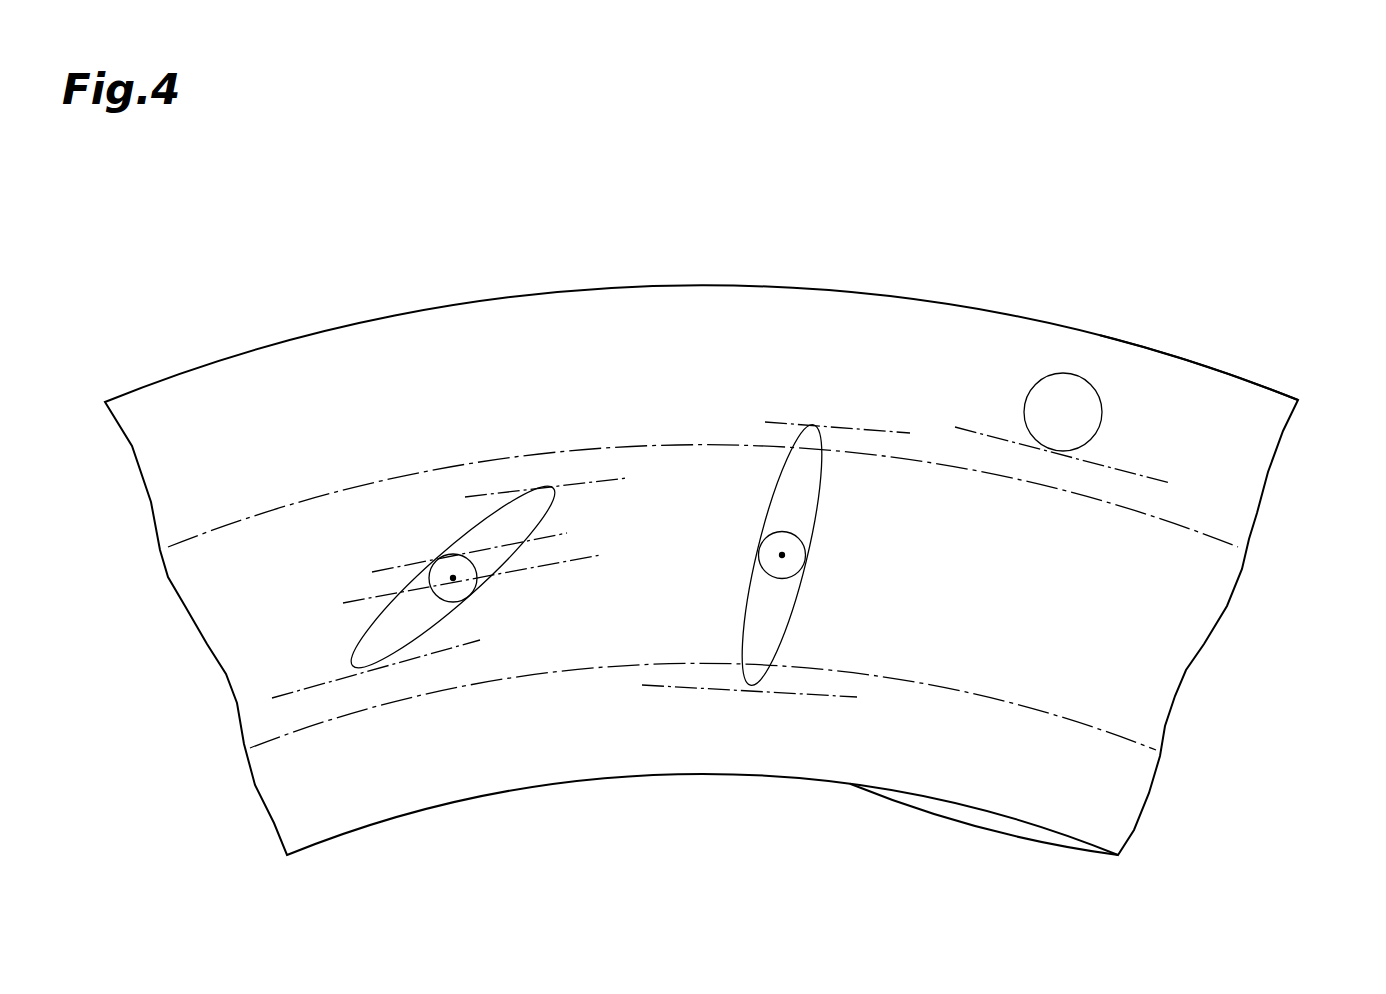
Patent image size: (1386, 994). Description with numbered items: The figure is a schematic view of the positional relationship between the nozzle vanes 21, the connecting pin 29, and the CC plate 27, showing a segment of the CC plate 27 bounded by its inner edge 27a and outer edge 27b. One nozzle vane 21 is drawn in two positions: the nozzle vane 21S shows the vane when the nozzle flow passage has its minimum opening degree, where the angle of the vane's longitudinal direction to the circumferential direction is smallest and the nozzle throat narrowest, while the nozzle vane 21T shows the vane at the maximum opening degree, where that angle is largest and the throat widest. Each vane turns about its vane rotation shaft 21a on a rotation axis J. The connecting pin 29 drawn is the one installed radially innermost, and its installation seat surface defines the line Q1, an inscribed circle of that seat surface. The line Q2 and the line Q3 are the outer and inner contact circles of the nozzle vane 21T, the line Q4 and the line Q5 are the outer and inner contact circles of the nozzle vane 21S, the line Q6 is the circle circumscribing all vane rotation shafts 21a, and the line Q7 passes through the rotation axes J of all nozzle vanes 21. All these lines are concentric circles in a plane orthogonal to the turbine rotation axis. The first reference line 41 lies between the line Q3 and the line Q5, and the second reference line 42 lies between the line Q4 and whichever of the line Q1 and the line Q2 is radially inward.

The CC plate 27 is at (777, 302).
The inner peripheral surface 27a is at (982, 813).
The outer peripheral surface 27b is at (1203, 364).
The connecting pin 29 is at (1065, 392).
The nozzle vane 21 is at (646, 542).
The nozzle vane at minimum opening degree 21S is at (505, 508).
The nozzle vane at maximum opening degree 21T is at (807, 495).
The vane rotation shaft 21a is at (450, 554).
The rotation axis of nozzle vane J is at (455, 578).
The first reference line 41 is at (1111, 726).
The second reference line 42 is at (1201, 531).
The inner circumferential contact circle of installation seat surface Q1 is at (1150, 478).
The outer circumferential contact circle of nozzle vane 21T Q2 is at (887, 428).
The inner circumferential contact circle of nozzle vane 21T Q3 is at (835, 695).
The outer circumferential contact circle of nozzle vane 21S Q4 is at (607, 480).
The inner circumferential contact circle of nozzle vane 21S Q5 is at (297, 688).
The outer circumferential contact circle of vane rotation shaft Q6 is at (383, 567).
The circle through vane rotation axes Q7 is at (580, 563).